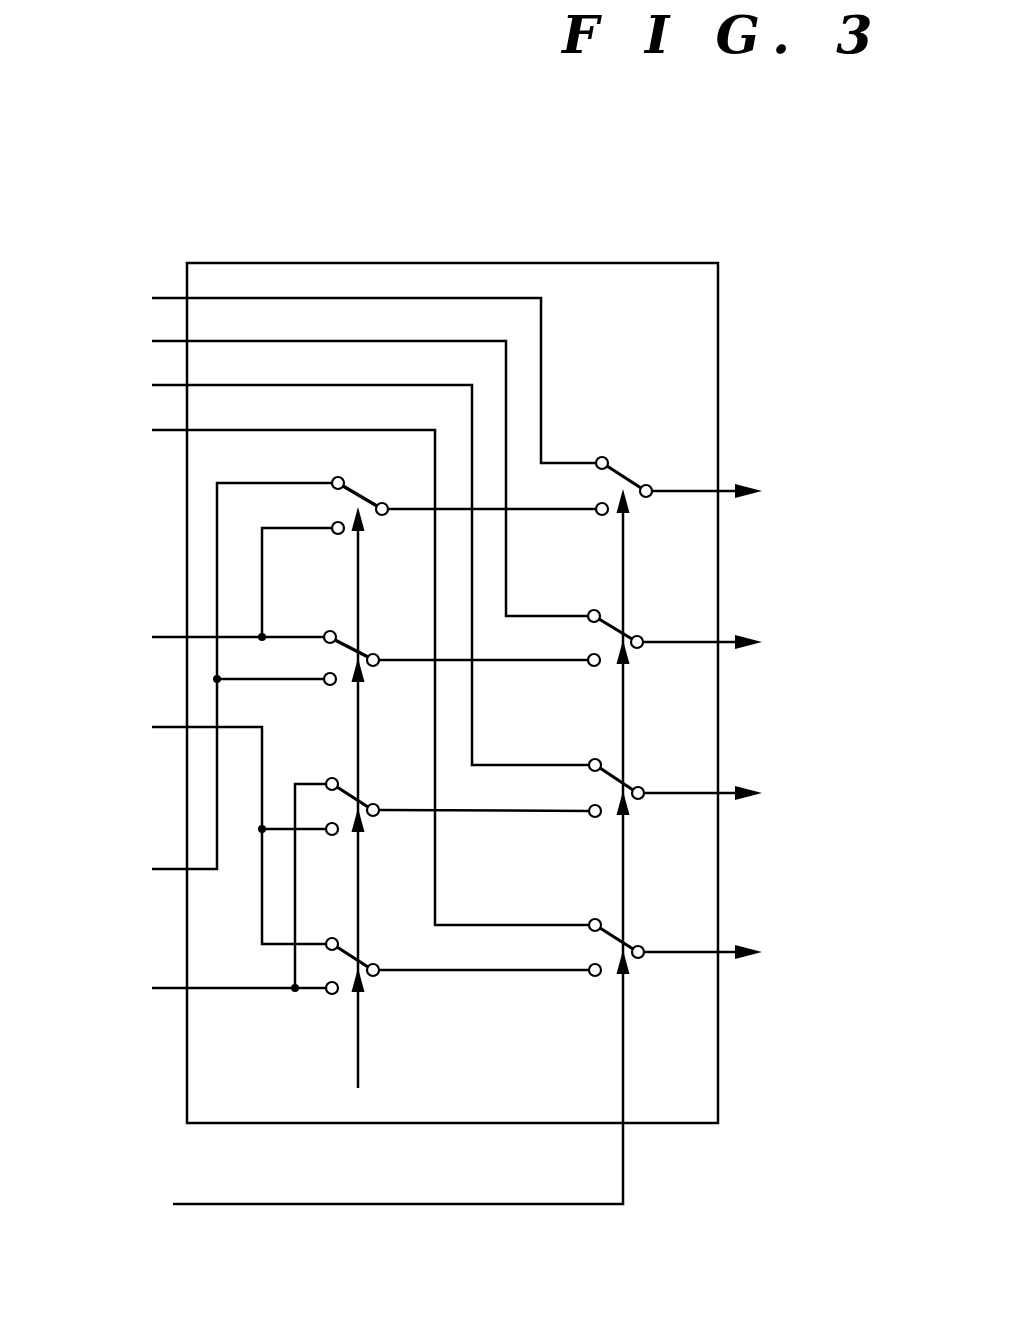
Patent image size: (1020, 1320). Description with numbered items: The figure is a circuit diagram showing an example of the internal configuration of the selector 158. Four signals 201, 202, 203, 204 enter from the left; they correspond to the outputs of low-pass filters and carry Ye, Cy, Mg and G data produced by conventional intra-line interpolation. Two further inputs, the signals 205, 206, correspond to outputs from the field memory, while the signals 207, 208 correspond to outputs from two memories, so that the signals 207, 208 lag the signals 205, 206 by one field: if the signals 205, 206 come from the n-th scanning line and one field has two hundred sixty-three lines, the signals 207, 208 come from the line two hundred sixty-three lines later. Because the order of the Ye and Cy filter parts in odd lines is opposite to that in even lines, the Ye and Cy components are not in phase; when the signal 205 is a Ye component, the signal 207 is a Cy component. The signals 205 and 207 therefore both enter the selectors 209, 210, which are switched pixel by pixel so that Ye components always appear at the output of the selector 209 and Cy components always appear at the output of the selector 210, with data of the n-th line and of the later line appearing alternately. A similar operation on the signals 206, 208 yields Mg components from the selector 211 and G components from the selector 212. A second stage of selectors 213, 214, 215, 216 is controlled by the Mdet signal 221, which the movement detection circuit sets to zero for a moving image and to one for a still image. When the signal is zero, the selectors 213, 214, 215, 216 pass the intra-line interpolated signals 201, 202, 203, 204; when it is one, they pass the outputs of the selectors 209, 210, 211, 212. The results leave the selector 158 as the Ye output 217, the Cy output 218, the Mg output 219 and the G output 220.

The selector 158 is at (480, 262).
The signal 201 is at (332, 373).
The signal 202 is at (326, 471).
The signal 203 is at (324, 568).
The signal 204 is at (333, 670).
The signal 205 is at (180, 589).
The signal 206 is at (179, 828).
The signal 207 is at (181, 683).
The signal 208 is at (179, 893).
The selector 209 is at (368, 497).
The selector 210 is at (368, 647).
The selector 211 is at (368, 797).
The selector 212 is at (366, 958).
The selector 213 is at (633, 482).
The selector 214 is at (633, 634).
The selector 215 is at (633, 785).
The selector 216 is at (633, 944).
The Ye output 217 is at (748, 491).
The Cy output 218 is at (746, 642).
The Mg output 219 is at (749, 793).
The G output 220 is at (740, 952).
The Mdet signal 221 is at (339, 861).